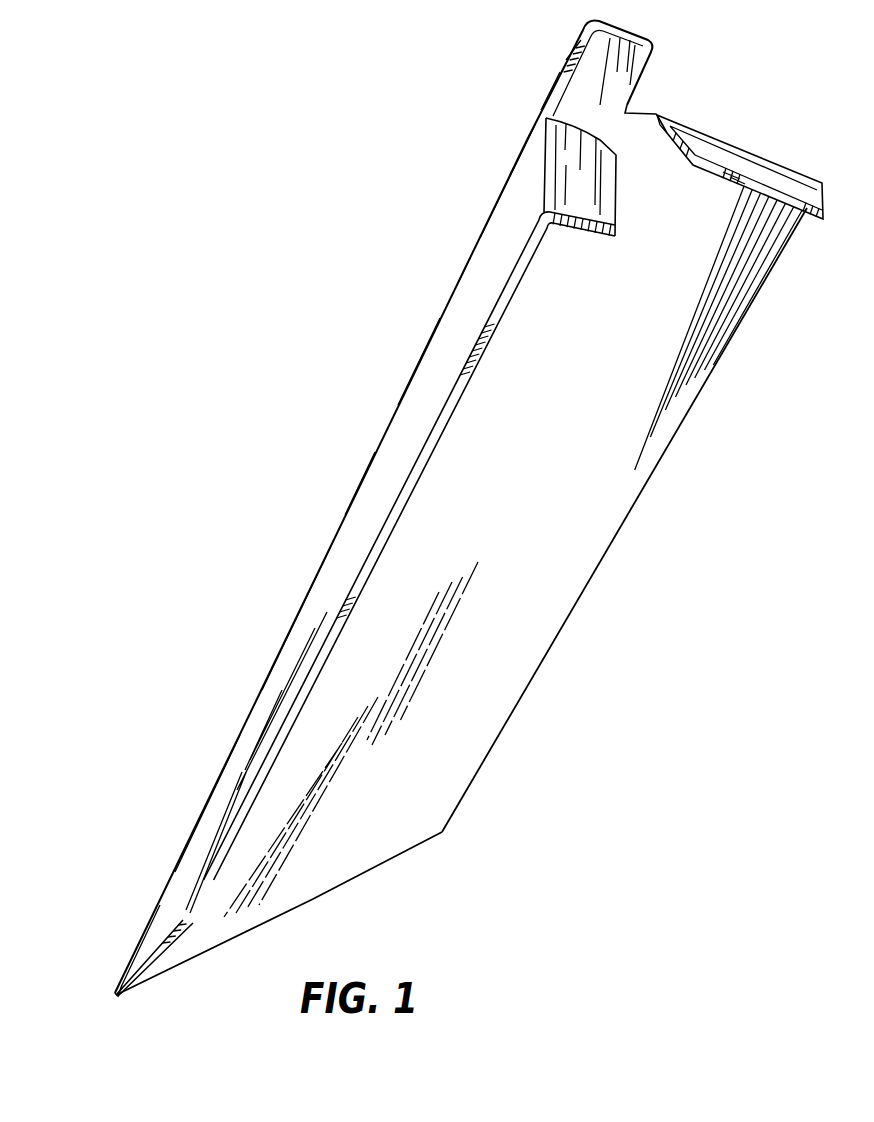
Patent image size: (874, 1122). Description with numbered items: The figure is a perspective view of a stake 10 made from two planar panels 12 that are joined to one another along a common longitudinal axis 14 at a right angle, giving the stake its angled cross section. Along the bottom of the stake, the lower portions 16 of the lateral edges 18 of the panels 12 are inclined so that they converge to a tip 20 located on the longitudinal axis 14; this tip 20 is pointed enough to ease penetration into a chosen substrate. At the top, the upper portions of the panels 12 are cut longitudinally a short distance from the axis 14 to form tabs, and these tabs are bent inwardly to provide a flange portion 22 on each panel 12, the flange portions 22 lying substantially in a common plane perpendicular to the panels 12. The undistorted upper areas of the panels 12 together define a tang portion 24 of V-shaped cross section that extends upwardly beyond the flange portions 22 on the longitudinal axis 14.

The stake 10 is at (602, 560).
The planar panel 12 is at (387, 490).
The longitudinal axis 14 is at (450, 300).
The lower portion 16 is at (145, 966).
The lateral edge 18 is at (312, 683).
The tip 20 is at (112, 1003).
The flange portion 22 is at (703, 167).
The tang portion 24 is at (607, 58).